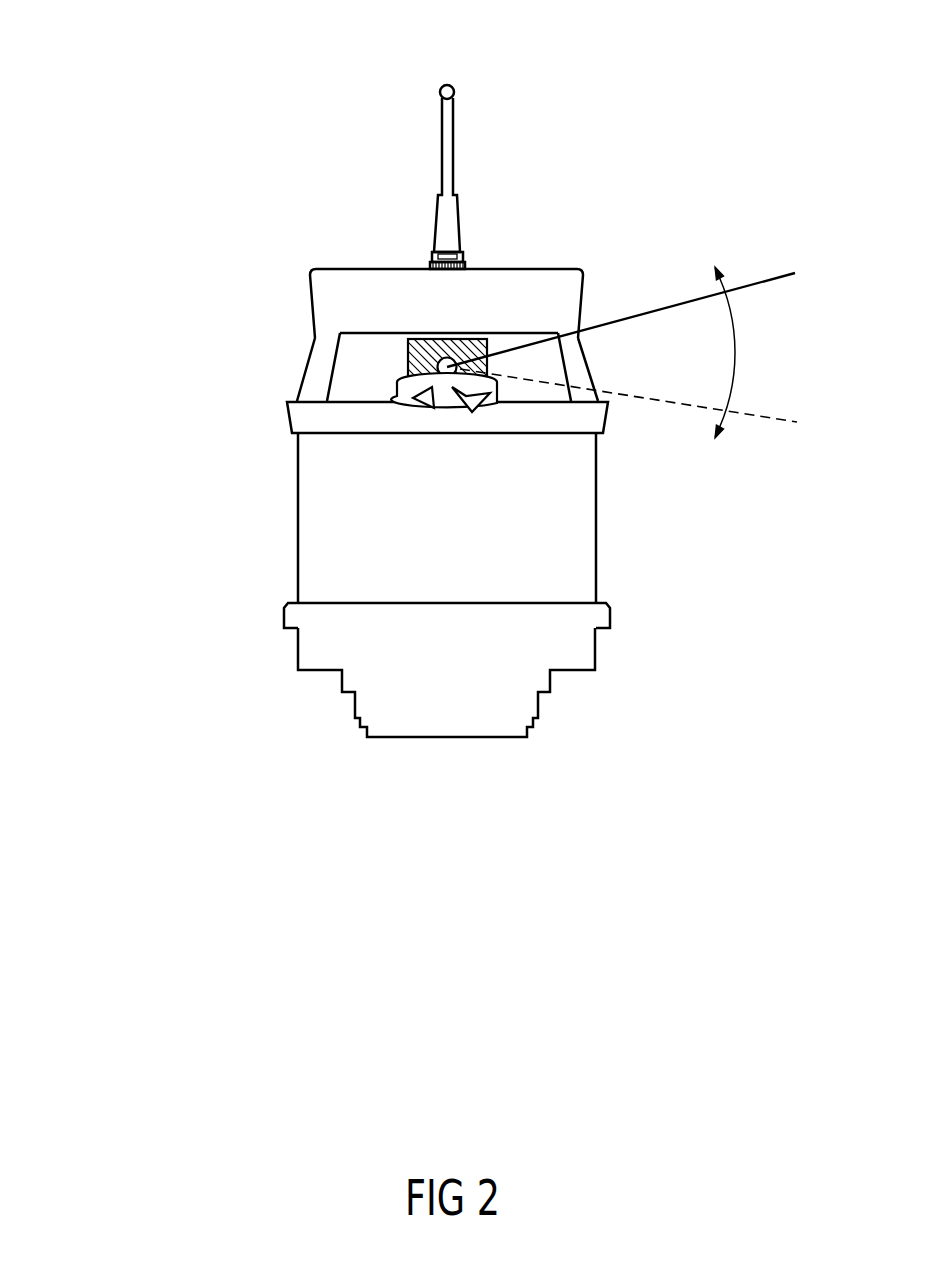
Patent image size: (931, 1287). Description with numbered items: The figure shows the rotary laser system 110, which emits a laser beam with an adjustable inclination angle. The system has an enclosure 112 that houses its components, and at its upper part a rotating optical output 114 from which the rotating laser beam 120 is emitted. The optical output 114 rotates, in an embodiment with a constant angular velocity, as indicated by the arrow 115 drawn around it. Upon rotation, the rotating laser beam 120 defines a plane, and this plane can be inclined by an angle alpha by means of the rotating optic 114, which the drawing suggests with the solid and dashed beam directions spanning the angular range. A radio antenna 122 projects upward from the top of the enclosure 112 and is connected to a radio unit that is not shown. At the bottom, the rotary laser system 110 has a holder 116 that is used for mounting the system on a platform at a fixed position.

The rotary laser system 110 is at (145, 202).
The enclosure 112 is at (596, 538).
The rotating optical output 114 is at (406, 372).
The arrow 115 is at (400, 392).
The holder 116 is at (483, 737).
The rotating laser beam 120 is at (808, 262).
The radio antenna 122 is at (452, 110).